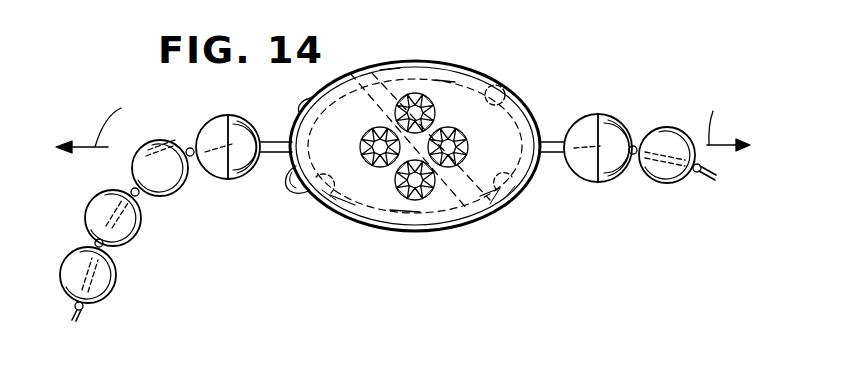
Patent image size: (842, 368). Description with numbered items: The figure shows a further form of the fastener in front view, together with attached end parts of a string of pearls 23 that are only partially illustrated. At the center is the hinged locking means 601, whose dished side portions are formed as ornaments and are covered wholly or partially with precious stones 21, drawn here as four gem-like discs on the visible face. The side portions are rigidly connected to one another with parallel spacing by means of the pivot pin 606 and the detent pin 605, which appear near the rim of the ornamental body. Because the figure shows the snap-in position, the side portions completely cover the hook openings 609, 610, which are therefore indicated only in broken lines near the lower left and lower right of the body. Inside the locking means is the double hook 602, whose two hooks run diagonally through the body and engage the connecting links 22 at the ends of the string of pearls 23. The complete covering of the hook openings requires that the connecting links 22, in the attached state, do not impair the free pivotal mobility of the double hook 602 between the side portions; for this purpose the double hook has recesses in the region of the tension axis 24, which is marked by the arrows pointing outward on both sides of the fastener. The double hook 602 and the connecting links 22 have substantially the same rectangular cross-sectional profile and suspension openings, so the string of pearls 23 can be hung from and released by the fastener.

The hinged locking means 601 is at (452, 65).
The double hook 602 is at (385, 78).
The pivot pin 606 is at (503, 86).
The detent pin 605 is at (292, 188).
The hook opening 610 is at (322, 204).
The hook opening 609 is at (497, 193).
The precious stones 21 is at (418, 201).
The connecting links 22 is at (271, 141).
The string of pearls 23 is at (123, 228).
The tension axis 24 is at (403, 121).